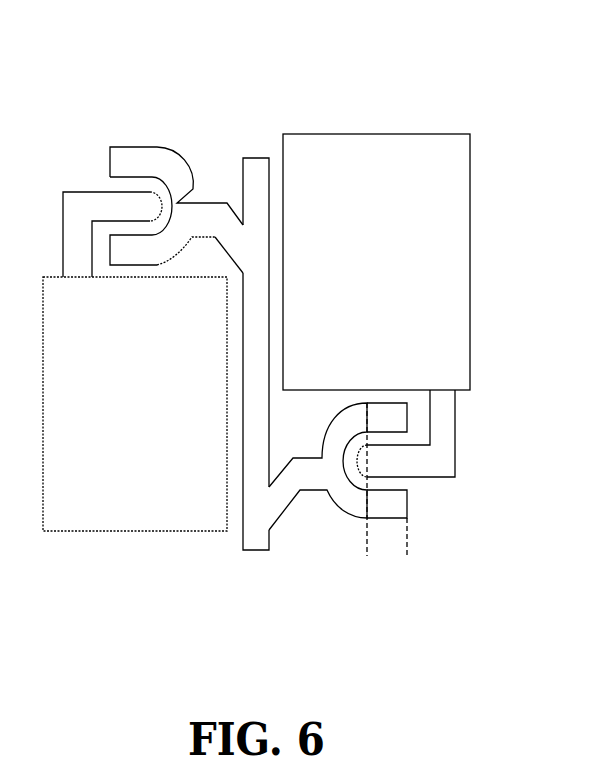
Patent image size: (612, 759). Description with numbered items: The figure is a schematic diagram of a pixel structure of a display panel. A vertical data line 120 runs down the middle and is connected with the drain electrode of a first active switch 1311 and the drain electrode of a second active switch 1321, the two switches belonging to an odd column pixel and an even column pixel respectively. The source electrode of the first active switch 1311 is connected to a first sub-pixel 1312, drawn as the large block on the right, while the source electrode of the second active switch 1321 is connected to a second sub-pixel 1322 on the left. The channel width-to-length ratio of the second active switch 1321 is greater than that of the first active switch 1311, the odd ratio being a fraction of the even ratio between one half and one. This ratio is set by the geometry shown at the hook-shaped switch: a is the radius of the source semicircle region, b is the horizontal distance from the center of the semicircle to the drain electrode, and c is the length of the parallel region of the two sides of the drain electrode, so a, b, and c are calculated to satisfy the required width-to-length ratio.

The data line 120 is at (265, 517).
The first active switch 1311 is at (320, 477).
The first sub-pixel 1312 is at (355, 177).
The second active switch 1321 is at (102, 487).
The second sub-pixel 1322 is at (195, 203).
The radius of source semicircle region a is at (370, 459).
The horizontal distance from semicircle center to drain electrode b is at (387, 460).
The length of parallel region of two sides of drain electrode c is at (407, 553).